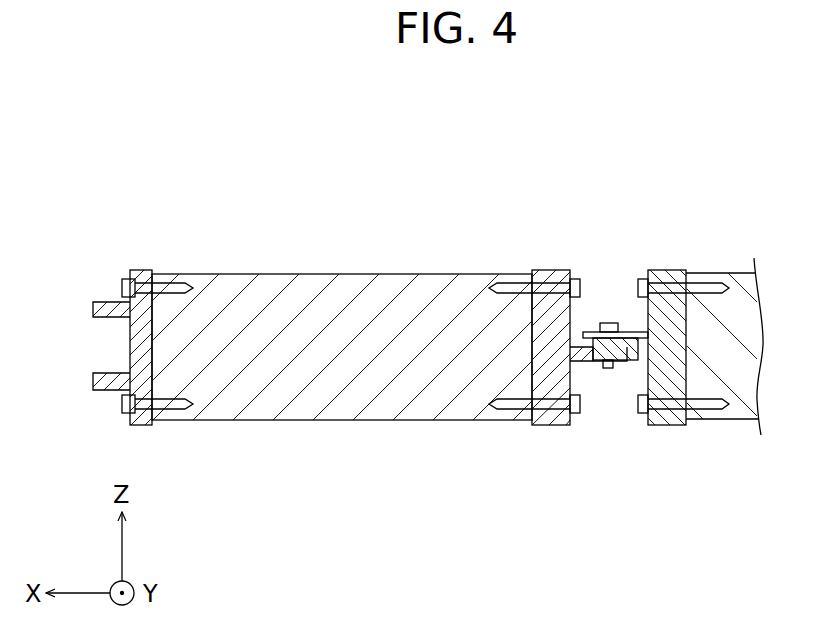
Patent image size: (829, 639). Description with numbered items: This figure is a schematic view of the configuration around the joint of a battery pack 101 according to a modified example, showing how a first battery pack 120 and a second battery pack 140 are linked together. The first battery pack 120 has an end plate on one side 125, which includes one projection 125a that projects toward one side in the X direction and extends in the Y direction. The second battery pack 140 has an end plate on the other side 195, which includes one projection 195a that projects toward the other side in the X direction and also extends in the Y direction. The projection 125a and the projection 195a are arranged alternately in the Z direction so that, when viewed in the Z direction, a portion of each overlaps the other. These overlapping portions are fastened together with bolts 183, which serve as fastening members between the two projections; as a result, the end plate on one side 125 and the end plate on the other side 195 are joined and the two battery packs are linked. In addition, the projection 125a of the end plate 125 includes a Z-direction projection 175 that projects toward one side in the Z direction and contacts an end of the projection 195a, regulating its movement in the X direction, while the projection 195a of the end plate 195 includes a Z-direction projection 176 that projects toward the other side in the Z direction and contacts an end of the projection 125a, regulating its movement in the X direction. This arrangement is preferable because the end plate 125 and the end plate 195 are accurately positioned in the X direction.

The battery pack 101 is at (618, 193).
The first battery pack 120 is at (727, 262).
The end plate on one side 125 is at (676, 270).
The projection 125a is at (630, 333).
The second battery pack 140 is at (326, 268).
The Z-direction projection 175 is at (623, 368).
The Z-direction projection 176 is at (593, 338).
The bolt 183 is at (607, 322).
The end plate on the other side 195 is at (543, 270).
The projection 195a is at (600, 362).